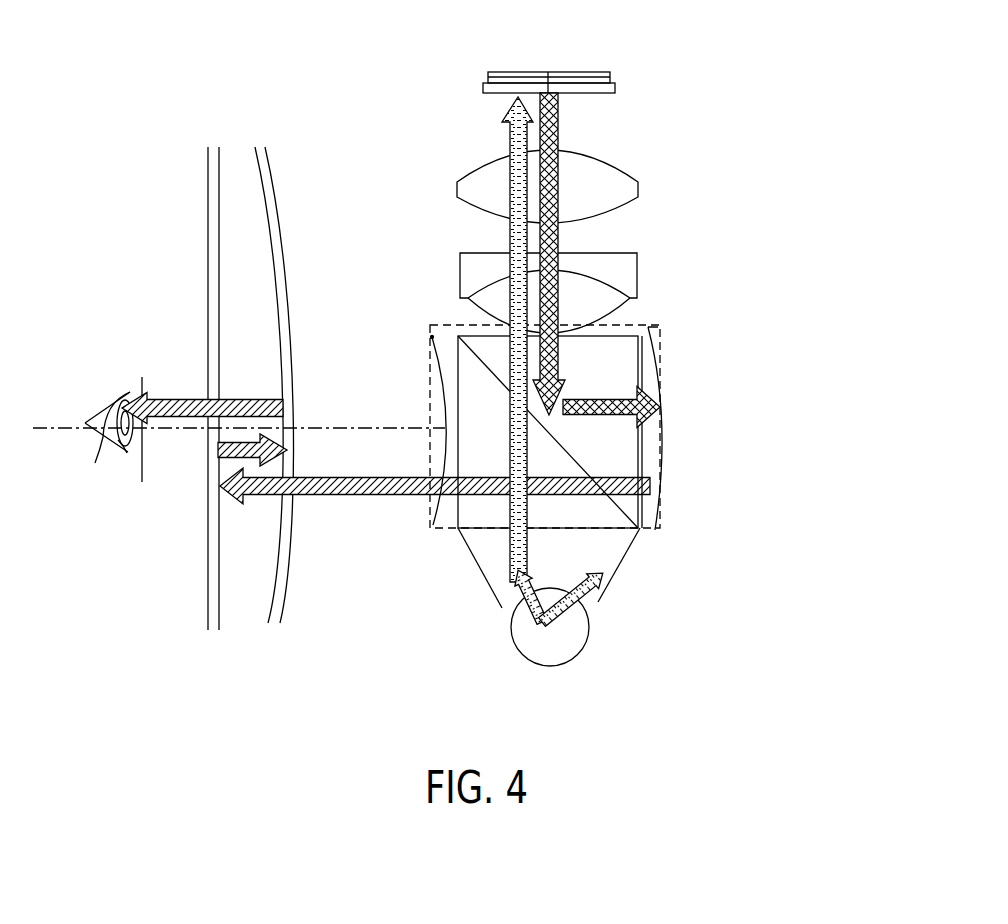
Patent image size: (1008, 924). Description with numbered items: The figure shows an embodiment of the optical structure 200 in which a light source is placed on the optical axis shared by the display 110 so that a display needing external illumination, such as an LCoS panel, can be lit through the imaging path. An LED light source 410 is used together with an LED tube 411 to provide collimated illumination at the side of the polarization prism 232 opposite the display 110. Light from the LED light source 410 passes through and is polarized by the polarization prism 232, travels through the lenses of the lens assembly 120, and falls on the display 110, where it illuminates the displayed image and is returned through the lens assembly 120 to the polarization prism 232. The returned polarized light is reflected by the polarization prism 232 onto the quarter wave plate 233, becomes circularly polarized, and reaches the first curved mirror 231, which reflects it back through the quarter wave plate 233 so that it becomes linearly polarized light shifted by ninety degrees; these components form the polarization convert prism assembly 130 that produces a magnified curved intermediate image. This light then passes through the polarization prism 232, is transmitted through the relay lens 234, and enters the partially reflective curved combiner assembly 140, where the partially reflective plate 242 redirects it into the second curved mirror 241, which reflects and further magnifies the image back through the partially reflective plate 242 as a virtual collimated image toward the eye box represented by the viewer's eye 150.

The optical structure 200 is at (168, 114).
The display 110 is at (617, 88).
The lens assembly 120 is at (668, 140).
The polarization convert prism assembly 130 is at (667, 325).
The partially reflective curved combiner assembly 140 is at (287, 639).
The viewer's eye 150 is at (112, 440).
The first curved mirror 231 is at (657, 344).
The polarization prism 232 is at (432, 337).
The quarter wave plate 233 is at (638, 378).
The relay lens 234 is at (445, 398).
The second curved mirror 241 is at (283, 267).
The partially reflective plate 242 is at (207, 217).
The LED light source 410 is at (589, 645).
The LED tube 411 is at (603, 590).